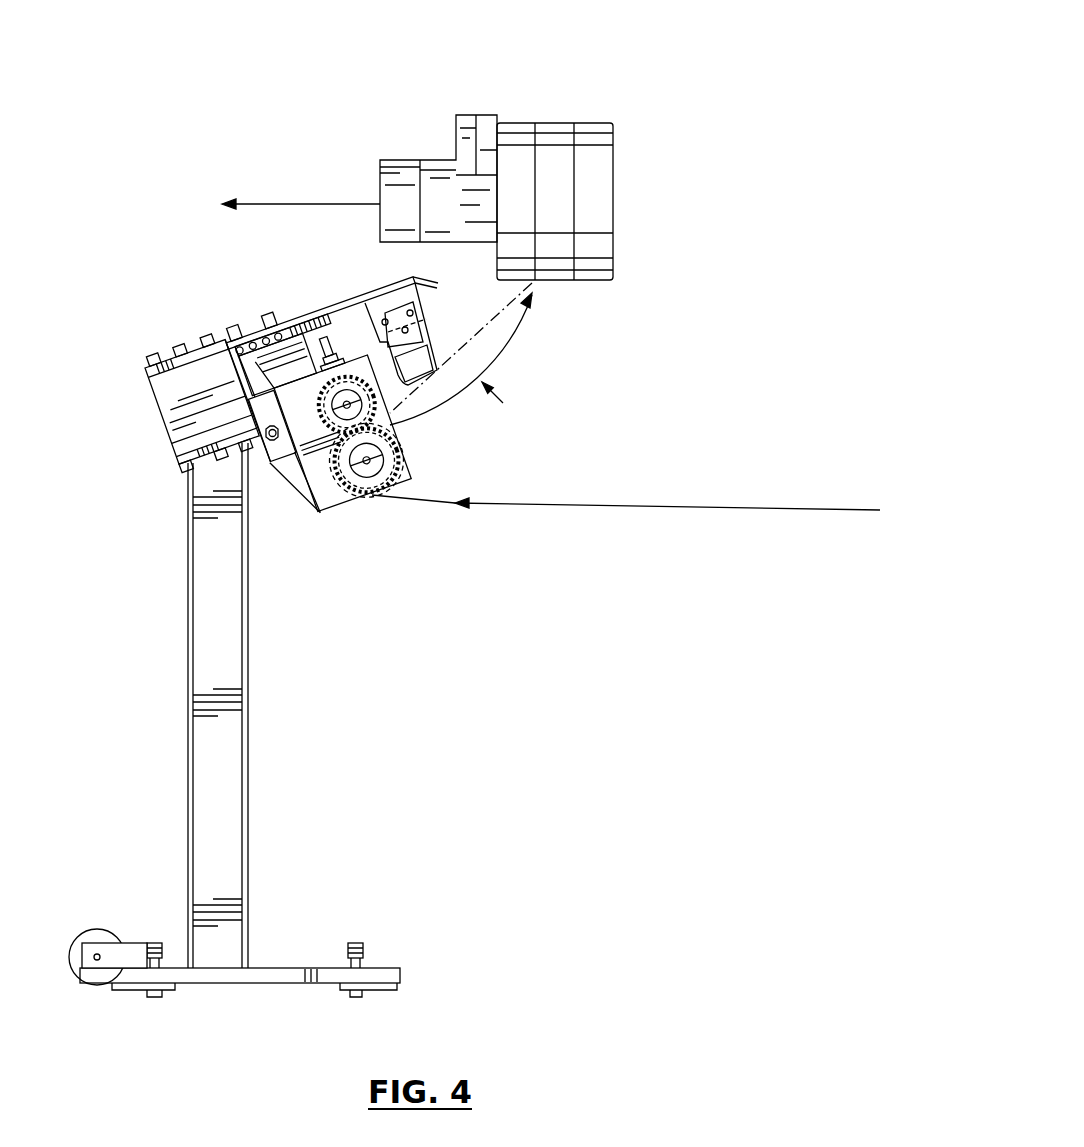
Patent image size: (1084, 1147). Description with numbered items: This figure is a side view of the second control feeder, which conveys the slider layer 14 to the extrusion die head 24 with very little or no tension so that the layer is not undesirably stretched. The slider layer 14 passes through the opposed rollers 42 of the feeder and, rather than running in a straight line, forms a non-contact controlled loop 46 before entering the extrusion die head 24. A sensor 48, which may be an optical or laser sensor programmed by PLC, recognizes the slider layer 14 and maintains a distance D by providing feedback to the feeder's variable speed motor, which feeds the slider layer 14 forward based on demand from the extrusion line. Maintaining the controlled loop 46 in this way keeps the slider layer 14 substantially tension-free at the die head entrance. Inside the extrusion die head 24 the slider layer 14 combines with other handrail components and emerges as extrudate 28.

The extrusion die head 24 is at (560, 123).
The extrudate 28 is at (308, 204).
The sensor 48 is at (448, 345).
The controlled loop 46 is at (513, 337).
The opposed rollers 42 is at (373, 403).
The slider layer 14 is at (651, 511).
The distance D is at (483, 372).